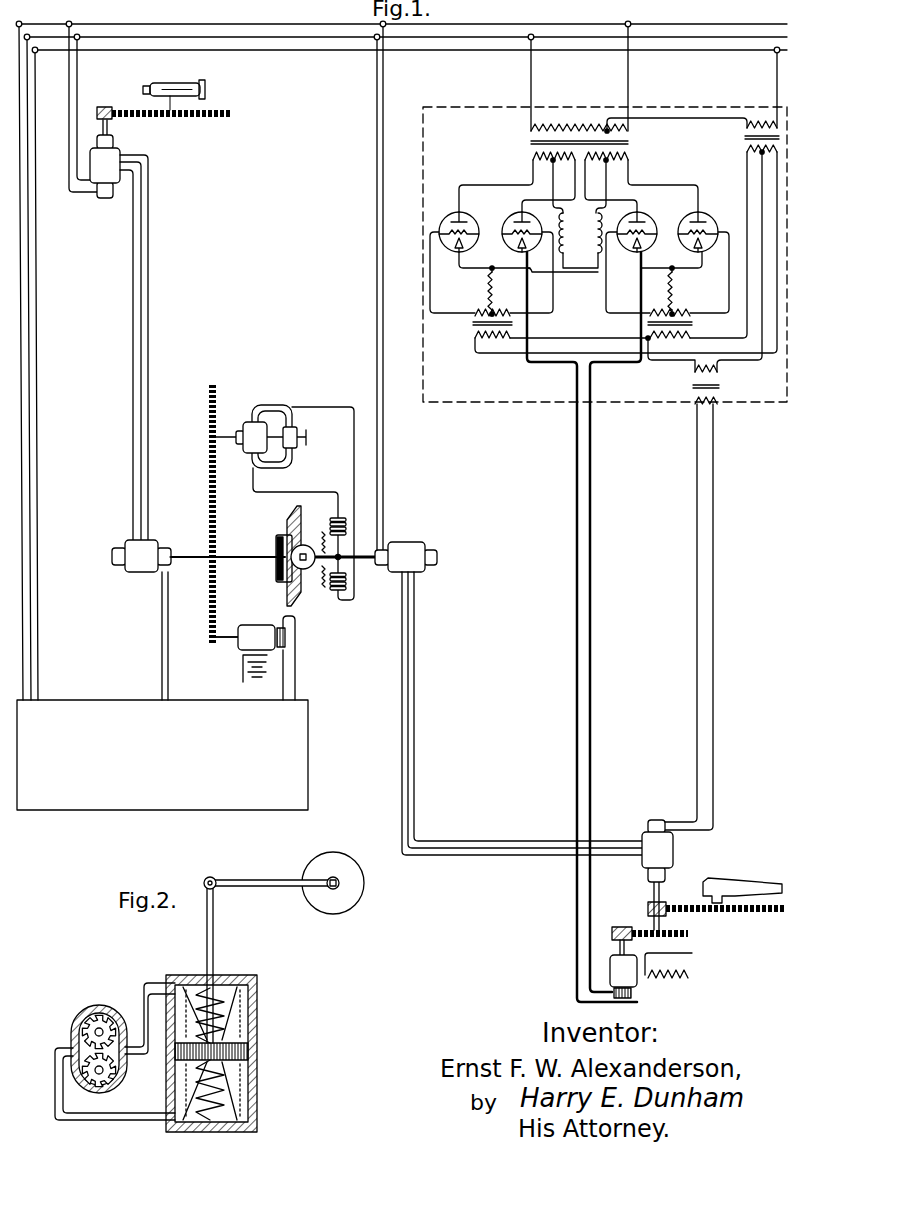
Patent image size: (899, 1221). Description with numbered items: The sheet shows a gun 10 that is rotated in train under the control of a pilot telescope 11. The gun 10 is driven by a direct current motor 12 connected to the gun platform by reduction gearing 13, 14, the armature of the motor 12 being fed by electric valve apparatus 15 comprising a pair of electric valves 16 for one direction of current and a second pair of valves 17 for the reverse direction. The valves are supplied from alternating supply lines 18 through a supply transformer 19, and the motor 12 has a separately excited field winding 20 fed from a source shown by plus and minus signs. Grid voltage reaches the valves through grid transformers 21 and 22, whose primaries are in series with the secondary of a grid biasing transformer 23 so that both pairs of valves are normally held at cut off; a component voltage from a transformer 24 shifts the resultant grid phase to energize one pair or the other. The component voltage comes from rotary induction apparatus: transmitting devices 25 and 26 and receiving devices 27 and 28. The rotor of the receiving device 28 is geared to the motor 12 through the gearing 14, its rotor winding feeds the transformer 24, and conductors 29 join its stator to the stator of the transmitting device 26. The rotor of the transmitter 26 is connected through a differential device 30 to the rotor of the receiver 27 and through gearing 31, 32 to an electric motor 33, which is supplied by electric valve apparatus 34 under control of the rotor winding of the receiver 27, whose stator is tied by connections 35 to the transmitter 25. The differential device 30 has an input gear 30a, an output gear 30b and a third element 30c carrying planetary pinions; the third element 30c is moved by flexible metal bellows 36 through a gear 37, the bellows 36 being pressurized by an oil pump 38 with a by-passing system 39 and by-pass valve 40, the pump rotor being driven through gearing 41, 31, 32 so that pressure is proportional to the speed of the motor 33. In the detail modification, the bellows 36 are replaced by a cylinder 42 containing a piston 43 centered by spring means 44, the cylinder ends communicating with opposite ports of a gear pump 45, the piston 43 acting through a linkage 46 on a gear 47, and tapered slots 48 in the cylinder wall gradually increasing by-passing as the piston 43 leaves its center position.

In FIG. 1, the gun 10 is at (754, 883).
In FIG. 1, the telescope 11 is at (180, 82).
In FIG. 1, the direct current electric motor 12 is at (623, 976).
In FIG. 1, the reduction gearing 13 is at (622, 927).
In FIG. 1, the reduction gearing 14 is at (674, 932).
In FIG. 1, the electric valve apparatus 15 is at (494, 179).
In FIG. 1, the electric valves 16 is at (508, 219).
In FIG. 1, the electric valves 17 is at (684, 219).
In FIG. 1, the supply lines 18 is at (224, 50).
In FIG. 1, the supply transformer 19 is at (632, 140).
In FIG. 1, the field winding 20 is at (676, 975).
In FIG. 1, the grid transformer 21 is at (470, 325).
In FIG. 1, the grid transformer 22 is at (693, 325).
In FIG. 1, the grid biasing transformer 23 is at (745, 135).
In FIG. 1, the transformer 24 is at (690, 380).
In FIG. 1, the transmitting device 25 is at (161, 152).
In FIG. 1, the transmitting device 26 is at (406, 557).
In FIG. 1, the receiving device 27 is at (141, 556).
In FIG. 1, the receiving device 28 is at (657, 851).
In FIG. 1, the conductors 29 is at (414, 703).
In FIG. 1, the differential device 30 is at (282, 521).
In FIG. 1, the input gear 30a is at (272, 549).
In FIG. 1, the output gear 30b is at (323, 583).
In FIG. 1, the third element 30c is at (312, 526).
In FIG. 1, the gearing 31 is at (216, 579).
In FIG. 1, the gearing 32 is at (209, 637).
In FIG. 1, the electric motor 33 is at (261, 661).
In FIG. 1, the electric valve apparatus 34 is at (162, 755).
In FIG. 1, the connections 35 is at (134, 312).
In FIG. 1, the flexible metal bellows 36 is at (347, 525).
In FIG. 1, the gear 37 is at (310, 546).
In FIG. 1, the oil pump 38 is at (251, 437).
In FIG. 1, the by-passing system 39 is at (290, 461).
In FIG. 1, the by-pass valve 40 is at (306, 437).
In FIG. 1, the gearing 41 is at (216, 399).
In FIG. 2, the cylinder 42 is at (257, 995).
In FIG. 2, the piston 43 is at (248, 1051).
In FIG. 2, the spring means 44 is at (222, 1026).
In FIG. 2, the gear pump 45 is at (99, 1005).
In FIG. 2, the linkage 46 is at (246, 880).
In FIG. 2, the gear 47 is at (316, 868).
In FIG. 2, the tapered slots 48 is at (228, 985).